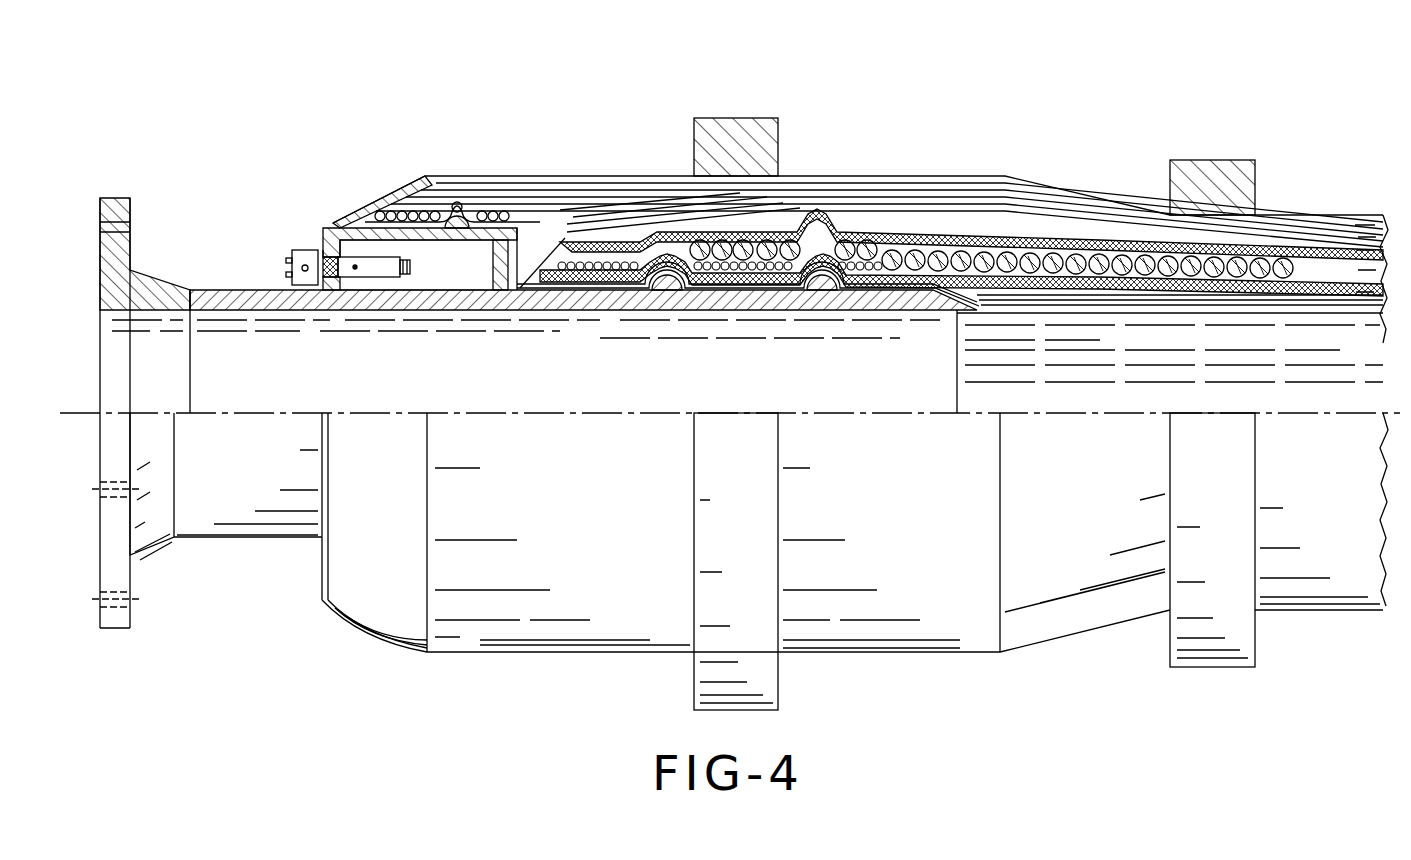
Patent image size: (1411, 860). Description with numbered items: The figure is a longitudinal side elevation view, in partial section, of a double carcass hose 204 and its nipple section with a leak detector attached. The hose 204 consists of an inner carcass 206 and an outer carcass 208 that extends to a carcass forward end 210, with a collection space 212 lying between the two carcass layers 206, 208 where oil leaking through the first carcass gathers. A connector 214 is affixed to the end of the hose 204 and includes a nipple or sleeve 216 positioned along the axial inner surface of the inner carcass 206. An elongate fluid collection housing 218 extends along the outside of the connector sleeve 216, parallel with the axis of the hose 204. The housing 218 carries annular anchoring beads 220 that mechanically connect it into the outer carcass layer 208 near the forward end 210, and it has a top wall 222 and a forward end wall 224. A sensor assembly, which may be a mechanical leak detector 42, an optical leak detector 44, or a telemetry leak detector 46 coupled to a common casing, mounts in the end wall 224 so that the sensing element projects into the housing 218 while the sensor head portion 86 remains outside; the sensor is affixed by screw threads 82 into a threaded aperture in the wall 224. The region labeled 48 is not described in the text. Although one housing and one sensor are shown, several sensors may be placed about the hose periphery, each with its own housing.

The double carcass hose 204 is at (948, 125).
The inner carcass 206 is at (1079, 242).
The outer carcass 208 is at (621, 176).
The carcass forward end 210 is at (328, 232).
The collection space 212 is at (538, 246).
The connector 214 is at (112, 198).
The nipple or sleeve 216 is at (190, 287).
The fluid collection housing 218 is at (434, 260).
The annular anchoring beads 220 is at (357, 214).
The top wall 222 is at (500, 240).
The forward end wall 224 is at (323, 250).
The sensor head portion 86 is at (297, 263).
The screw threads 82 is at (334, 290).
The sensor cavity 48 is at (412, 268).
The mechanical leak detector assembly 42 is at (380, 329).
The optical leak detector assembly 44 is at (380, 329).
The telemetry leak detector assembly 46 is at (381, 281).